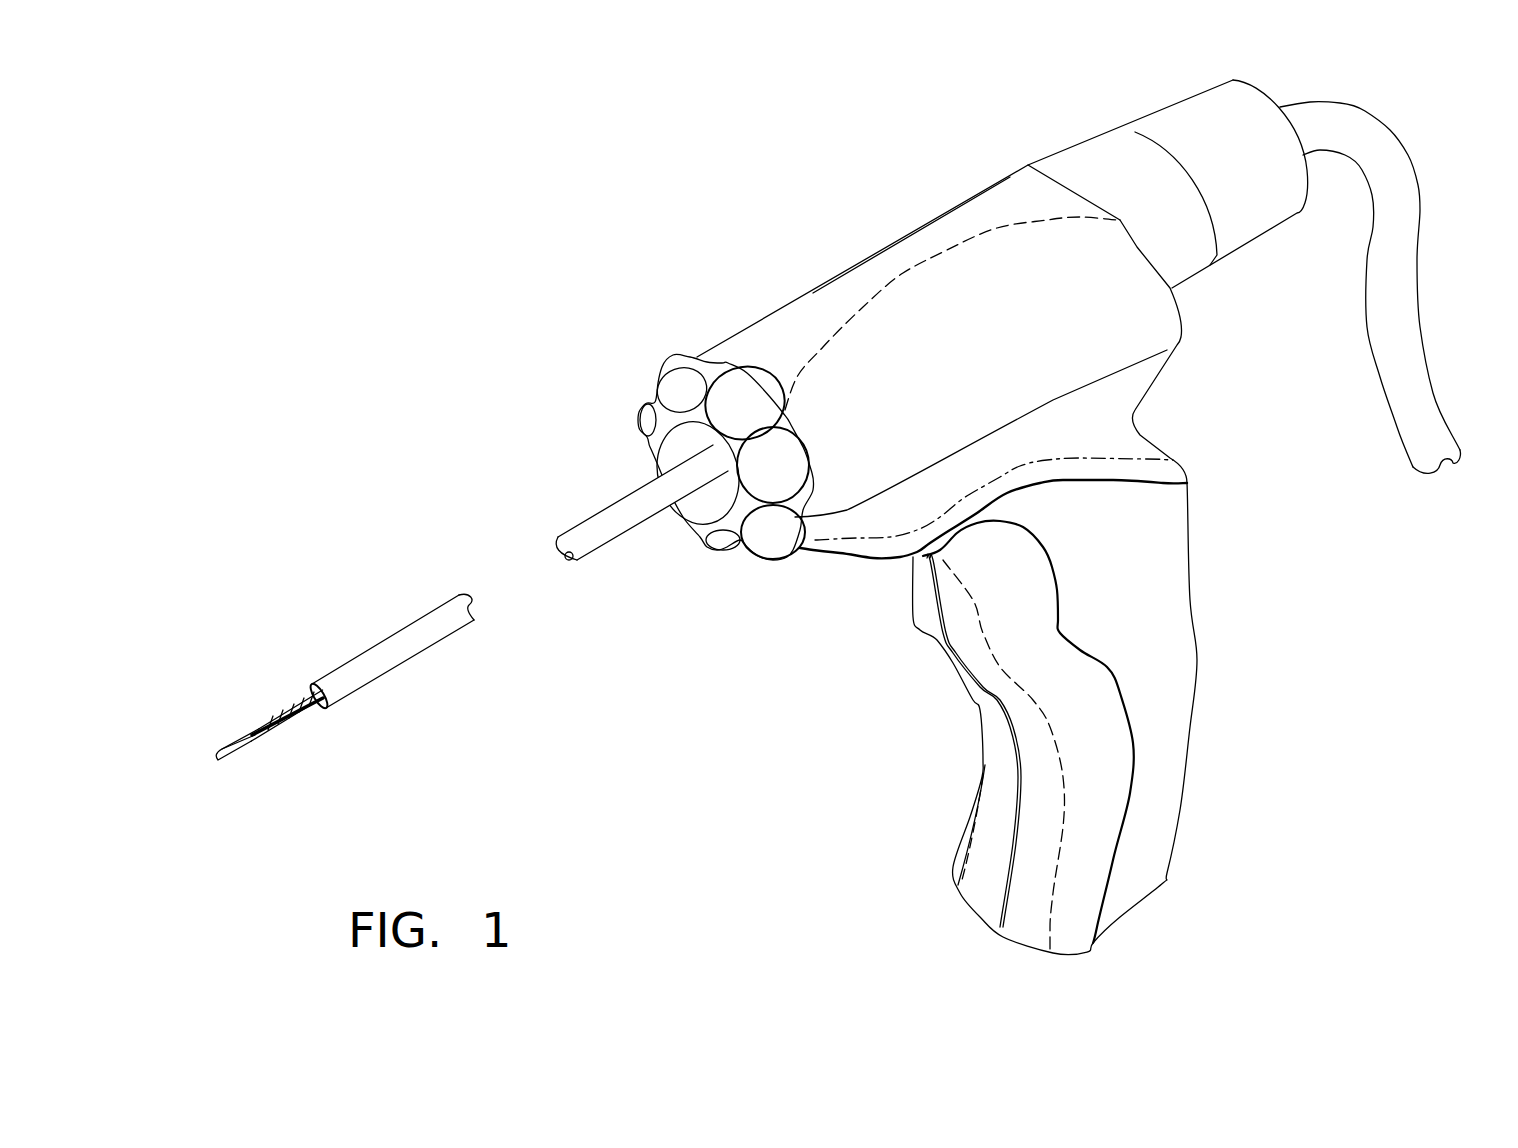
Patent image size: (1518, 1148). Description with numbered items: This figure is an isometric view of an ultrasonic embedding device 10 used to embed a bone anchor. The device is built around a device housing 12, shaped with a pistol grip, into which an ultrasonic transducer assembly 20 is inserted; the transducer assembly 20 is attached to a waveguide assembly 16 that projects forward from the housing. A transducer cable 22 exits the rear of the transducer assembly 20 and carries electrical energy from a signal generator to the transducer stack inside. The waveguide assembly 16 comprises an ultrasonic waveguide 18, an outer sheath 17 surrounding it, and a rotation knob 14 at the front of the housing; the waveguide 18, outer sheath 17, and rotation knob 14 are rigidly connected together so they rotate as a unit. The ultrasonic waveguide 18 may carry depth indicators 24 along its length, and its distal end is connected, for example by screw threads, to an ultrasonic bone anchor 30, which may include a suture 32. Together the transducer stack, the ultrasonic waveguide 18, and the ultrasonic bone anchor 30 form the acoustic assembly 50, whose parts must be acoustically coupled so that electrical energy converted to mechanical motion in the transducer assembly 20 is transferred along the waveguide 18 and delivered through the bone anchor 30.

The ultrasonic embedding device 10 is at (465, 265).
The device housing 12 is at (1200, 655).
The rotation knob 14 is at (658, 380).
The waveguide assembly 16 is at (632, 561).
The outer sheath 17 is at (573, 527).
The ultrasonic waveguide 18 is at (293, 690).
The ultrasonic transducer assembly 20 is at (1246, 260).
The transducer cable 22 is at (1413, 283).
The depth indicators 24 is at (260, 713).
The ultrasonic bone anchor 30 is at (218, 757).
The suture 32 is at (287, 717).
The acoustic assembly 50 is at (190, 760).